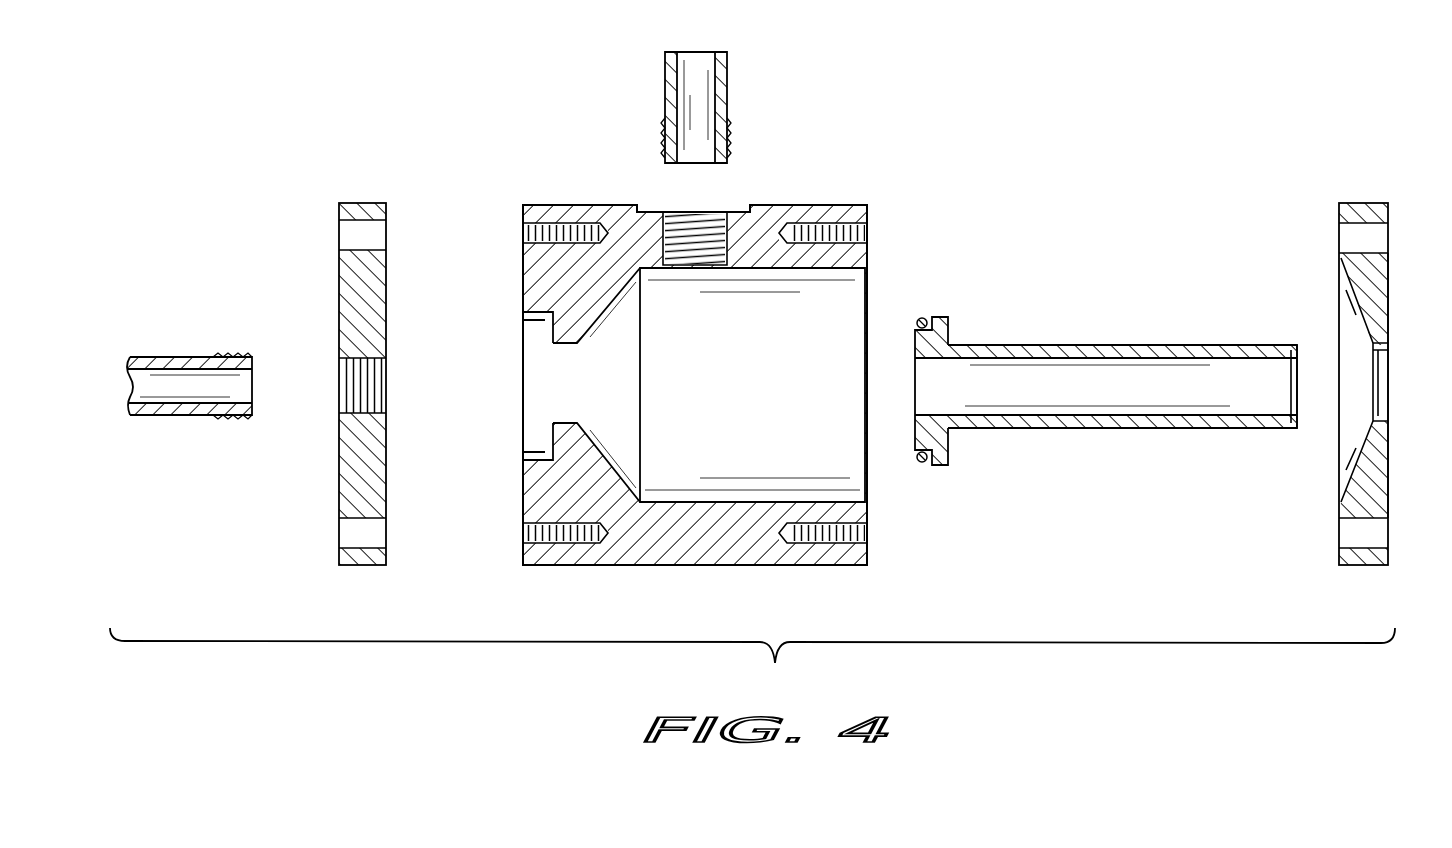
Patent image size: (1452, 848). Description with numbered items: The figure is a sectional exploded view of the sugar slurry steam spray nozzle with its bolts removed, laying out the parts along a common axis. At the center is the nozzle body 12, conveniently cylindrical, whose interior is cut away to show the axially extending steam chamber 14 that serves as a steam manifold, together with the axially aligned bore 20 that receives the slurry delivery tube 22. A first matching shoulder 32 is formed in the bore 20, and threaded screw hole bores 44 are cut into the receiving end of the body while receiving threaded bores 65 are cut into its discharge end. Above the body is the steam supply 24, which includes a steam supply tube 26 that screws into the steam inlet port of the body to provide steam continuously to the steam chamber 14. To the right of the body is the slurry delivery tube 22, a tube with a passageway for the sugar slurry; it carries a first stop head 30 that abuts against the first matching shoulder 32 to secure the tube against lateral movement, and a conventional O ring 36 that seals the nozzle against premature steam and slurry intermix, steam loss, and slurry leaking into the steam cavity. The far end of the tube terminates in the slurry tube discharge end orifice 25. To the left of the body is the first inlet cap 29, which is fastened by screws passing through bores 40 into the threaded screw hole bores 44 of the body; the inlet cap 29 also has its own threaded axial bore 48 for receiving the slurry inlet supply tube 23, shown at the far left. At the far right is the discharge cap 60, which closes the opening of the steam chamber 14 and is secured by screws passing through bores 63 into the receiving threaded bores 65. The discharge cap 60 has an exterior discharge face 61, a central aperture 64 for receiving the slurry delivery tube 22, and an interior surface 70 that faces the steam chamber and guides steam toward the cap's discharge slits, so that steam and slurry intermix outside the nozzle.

The nozzle body 12 is at (676, 366).
The steam chamber 14 is at (690, 503).
The axially aligned bore 20 is at (577, 418).
The slurry delivery tube 22 is at (1112, 394).
The slurry inlet supply tube 23 is at (170, 357).
The steam supply 24 is at (747, 99).
The slurry tube discharge end orifice 25 is at (1297, 415).
The steam supply tube 26 is at (725, 131).
The first inlet cap 29 is at (399, 347).
The first stop head 30 is at (942, 316).
The first matching shoulder 32 is at (523, 332).
The O ring 36 is at (922, 466).
The bores in the inlet cap 40 is at (365, 250).
The threaded screw hole bores 44 is at (545, 225).
The axial bore of the inlet cap 48 is at (383, 368).
The discharge cap 60 is at (1351, 335).
The exterior discharge face 61 is at (1390, 497).
The bores in the discharge cap 63 is at (1352, 246).
The central aperture 64 is at (1388, 410).
The receiving threaded bores 65 is at (835, 222).
The interior surface of the discharge cap 70 is at (1343, 466).